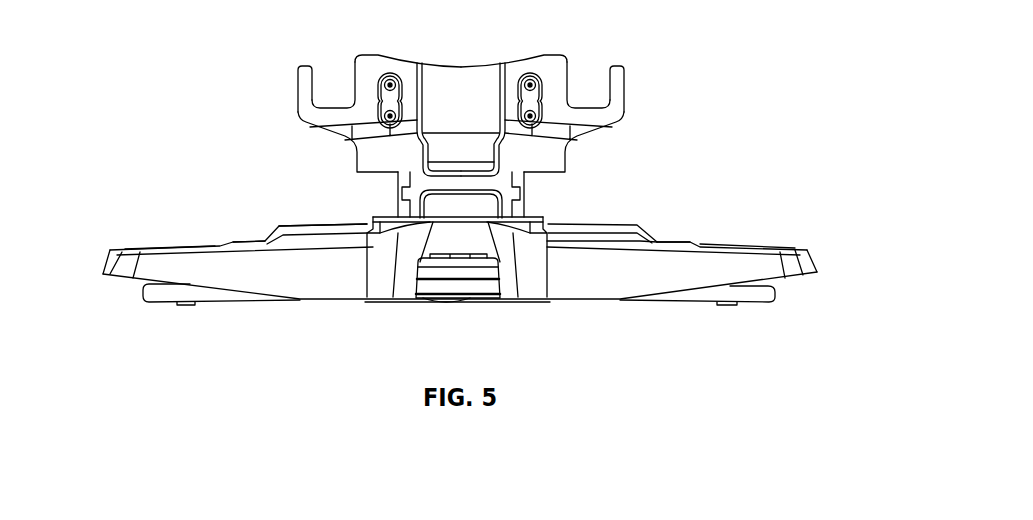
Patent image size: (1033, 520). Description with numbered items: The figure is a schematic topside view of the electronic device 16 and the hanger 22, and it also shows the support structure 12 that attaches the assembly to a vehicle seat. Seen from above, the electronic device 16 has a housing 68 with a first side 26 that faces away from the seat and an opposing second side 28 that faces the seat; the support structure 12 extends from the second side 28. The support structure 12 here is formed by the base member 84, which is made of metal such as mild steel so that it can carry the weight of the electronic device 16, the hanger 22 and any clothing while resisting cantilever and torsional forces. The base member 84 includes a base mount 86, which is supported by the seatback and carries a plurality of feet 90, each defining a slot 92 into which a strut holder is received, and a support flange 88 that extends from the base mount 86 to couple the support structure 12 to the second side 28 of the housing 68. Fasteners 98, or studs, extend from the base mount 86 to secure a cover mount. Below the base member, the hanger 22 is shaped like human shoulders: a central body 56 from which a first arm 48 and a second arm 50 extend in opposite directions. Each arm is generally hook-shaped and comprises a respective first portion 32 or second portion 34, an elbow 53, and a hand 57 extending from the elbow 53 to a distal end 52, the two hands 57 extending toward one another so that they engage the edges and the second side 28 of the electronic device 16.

The support structure 12 is at (609, 149).
The electronic device 16 is at (640, 230).
The hanger 22 is at (413, 238).
The first side 26 is at (683, 300).
The second side 28 is at (601, 218).
The first portion 32 is at (727, 259).
The second portion 34 is at (242, 282).
The first arm 48 is at (806, 252).
The second arm 50 is at (130, 269).
The distal end 52 is at (223, 241).
The elbow 53 is at (107, 261).
The body 56 is at (457, 247).
The hand 57 is at (182, 244).
The housing 68 is at (289, 239).
The base member 84 is at (468, 79).
The base mount 86 is at (465, 97).
The support flange 88 is at (512, 211).
The feet 90 is at (302, 86).
The slot 92 is at (355, 70).
The fasteners 98 is at (389, 84).